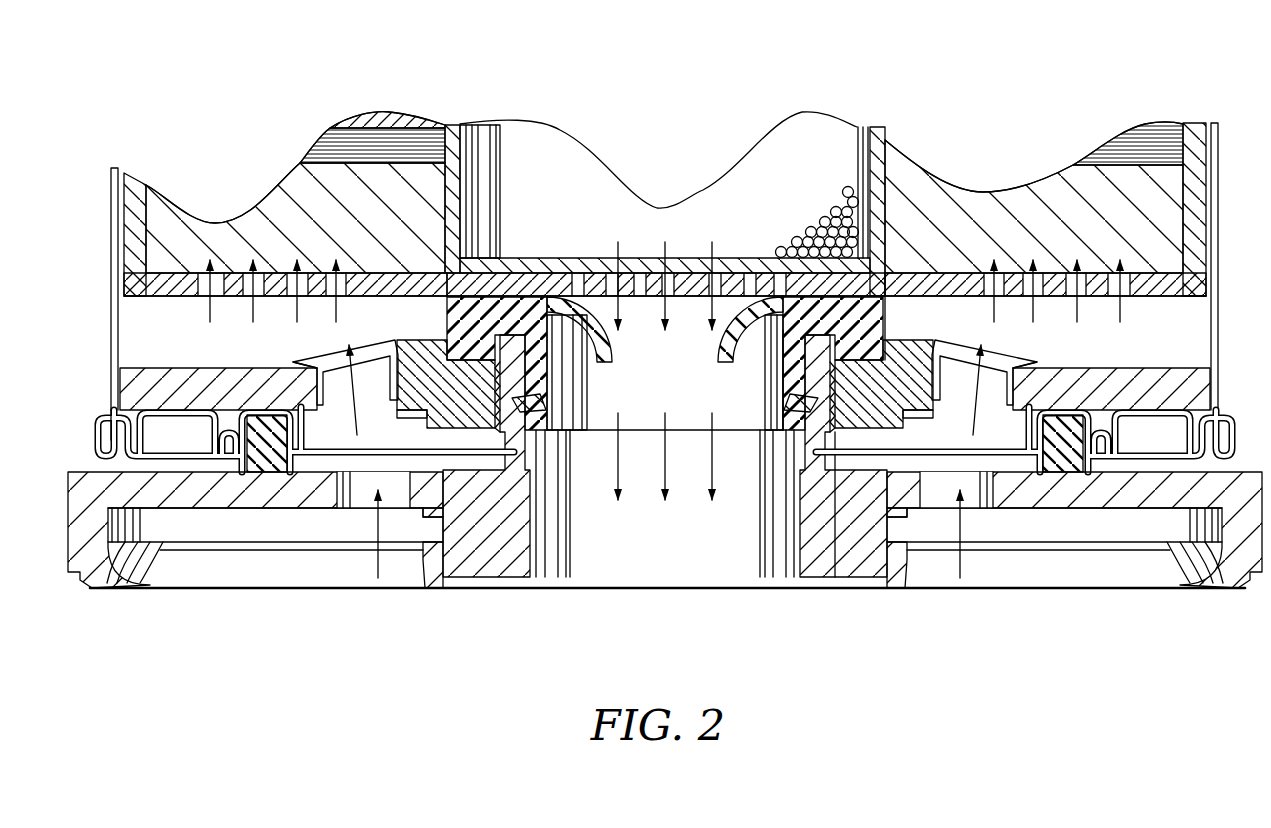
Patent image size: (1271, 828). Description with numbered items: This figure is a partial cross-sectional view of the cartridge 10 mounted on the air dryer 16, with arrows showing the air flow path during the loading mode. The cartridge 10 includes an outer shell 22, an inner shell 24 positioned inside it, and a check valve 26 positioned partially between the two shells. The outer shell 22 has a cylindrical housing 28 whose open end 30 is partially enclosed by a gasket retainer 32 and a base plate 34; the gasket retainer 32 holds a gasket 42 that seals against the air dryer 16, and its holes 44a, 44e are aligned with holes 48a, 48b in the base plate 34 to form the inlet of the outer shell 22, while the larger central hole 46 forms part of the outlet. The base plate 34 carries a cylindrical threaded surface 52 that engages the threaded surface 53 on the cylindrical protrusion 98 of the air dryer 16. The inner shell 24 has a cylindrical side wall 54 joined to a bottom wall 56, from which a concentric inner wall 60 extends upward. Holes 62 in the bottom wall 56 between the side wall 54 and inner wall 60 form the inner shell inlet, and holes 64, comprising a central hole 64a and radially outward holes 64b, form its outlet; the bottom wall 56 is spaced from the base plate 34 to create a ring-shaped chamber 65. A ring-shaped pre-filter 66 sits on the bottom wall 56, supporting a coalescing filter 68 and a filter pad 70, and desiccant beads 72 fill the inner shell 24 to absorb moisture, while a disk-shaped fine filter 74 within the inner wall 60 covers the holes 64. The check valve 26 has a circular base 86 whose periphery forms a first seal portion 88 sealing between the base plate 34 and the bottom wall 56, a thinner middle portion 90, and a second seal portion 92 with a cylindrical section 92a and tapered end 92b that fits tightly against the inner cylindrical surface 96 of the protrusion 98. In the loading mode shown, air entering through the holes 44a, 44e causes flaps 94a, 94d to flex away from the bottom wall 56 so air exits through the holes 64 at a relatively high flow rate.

The cartridge 10 is at (1050, 85).
The air dryer 16 is at (475, 563).
The outer shell 22 is at (1219, 136).
The inner shell 24 is at (1198, 188).
The check valve 26 is at (783, 398).
The cylindrical housing 28 is at (112, 178).
The open end 30 is at (110, 413).
The gasket retainer 32 is at (100, 436).
The base plate 34 is at (184, 382).
The gasket 42 is at (270, 465).
The hole 44a is at (412, 380).
The hole 44e is at (925, 380).
The central hole 46 is at (915, 420).
The hole 48a is at (328, 358).
The hole 48b is at (1005, 358).
The threaded surface 52 is at (815, 455).
The threaded surface 53 is at (530, 440).
The side wall 54 is at (135, 205).
The bottom wall 56 is at (1200, 300).
The inner wall 60 is at (455, 138).
The holes 62 is at (220, 282).
The holes 64 is at (602, 282).
The central hole 64a is at (693, 282).
The holes 64b is at (762, 282).
The ring-shaped chamber 65 is at (1180, 333).
The pre-filter 66 is at (170, 232).
The coalescing filter 68 is at (427, 140).
The filter pad 70 is at (380, 116).
The desiccant beads 72 is at (842, 200).
The fine filter 74 is at (560, 240).
The base 86 is at (893, 235).
The first seal portion 88 is at (498, 210).
The middle portion 90 is at (505, 268).
The second seal portion 92 is at (552, 378).
The cylindrical section 92a is at (786, 380).
The tapered end 92b is at (560, 402).
The flap 94a is at (608, 365).
The flap 94d is at (722, 364).
The inner cylindrical surface 96 is at (535, 425).
The cylindrical protrusion 98 is at (800, 425).